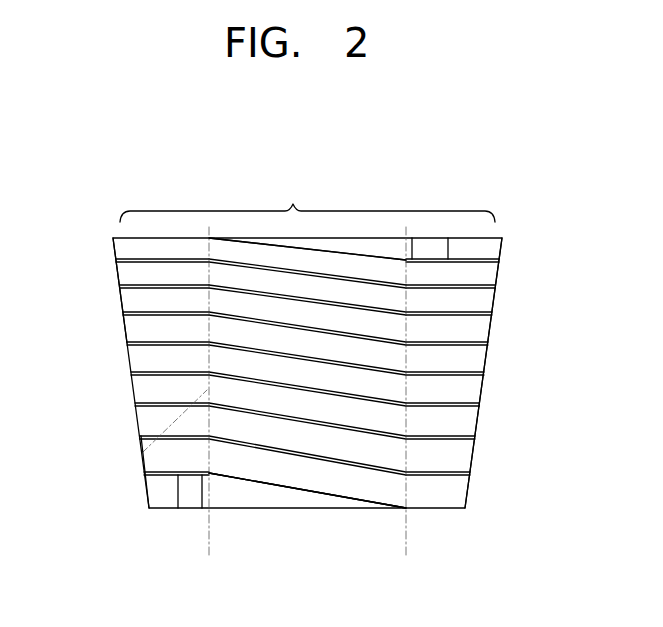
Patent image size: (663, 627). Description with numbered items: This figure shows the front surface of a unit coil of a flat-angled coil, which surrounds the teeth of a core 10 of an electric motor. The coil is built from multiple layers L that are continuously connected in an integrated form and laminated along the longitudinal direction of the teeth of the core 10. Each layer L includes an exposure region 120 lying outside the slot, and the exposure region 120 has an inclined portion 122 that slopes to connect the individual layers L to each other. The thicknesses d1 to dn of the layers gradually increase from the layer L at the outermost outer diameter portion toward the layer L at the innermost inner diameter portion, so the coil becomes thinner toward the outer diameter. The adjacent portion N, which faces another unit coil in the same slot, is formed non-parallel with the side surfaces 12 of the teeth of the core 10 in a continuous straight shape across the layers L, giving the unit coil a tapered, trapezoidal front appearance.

The core 10 is at (407, 529).
The side surfaces 12 is at (142, 452).
The exposure region 120 is at (307, 201).
The inclined portion 122 is at (272, 468).
The adjacent portion N is at (113, 348).
The layers L is at (490, 275).
The thickness of first layer d1 is at (332, 225).
The thickness of n-th layer dn is at (348, 430).